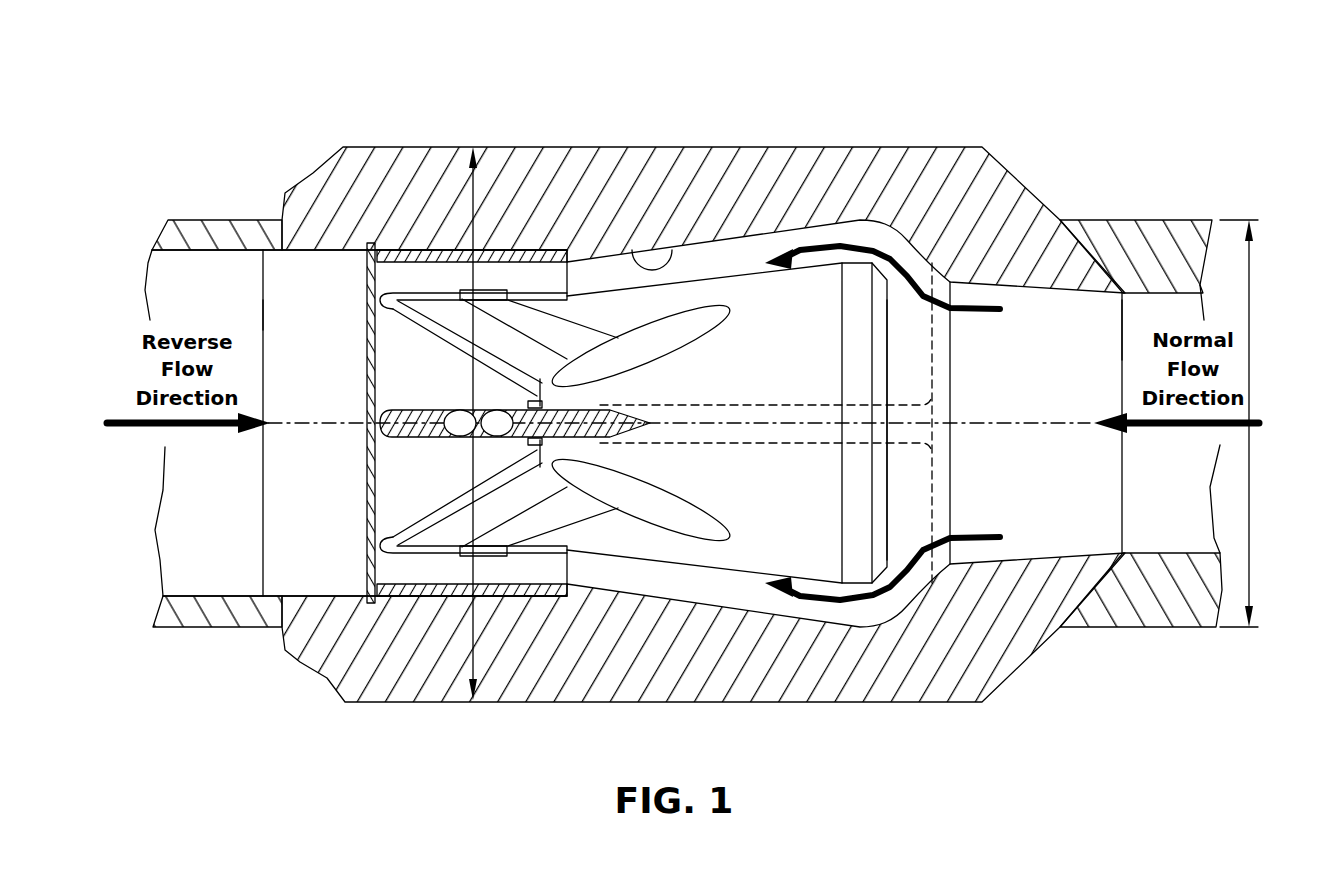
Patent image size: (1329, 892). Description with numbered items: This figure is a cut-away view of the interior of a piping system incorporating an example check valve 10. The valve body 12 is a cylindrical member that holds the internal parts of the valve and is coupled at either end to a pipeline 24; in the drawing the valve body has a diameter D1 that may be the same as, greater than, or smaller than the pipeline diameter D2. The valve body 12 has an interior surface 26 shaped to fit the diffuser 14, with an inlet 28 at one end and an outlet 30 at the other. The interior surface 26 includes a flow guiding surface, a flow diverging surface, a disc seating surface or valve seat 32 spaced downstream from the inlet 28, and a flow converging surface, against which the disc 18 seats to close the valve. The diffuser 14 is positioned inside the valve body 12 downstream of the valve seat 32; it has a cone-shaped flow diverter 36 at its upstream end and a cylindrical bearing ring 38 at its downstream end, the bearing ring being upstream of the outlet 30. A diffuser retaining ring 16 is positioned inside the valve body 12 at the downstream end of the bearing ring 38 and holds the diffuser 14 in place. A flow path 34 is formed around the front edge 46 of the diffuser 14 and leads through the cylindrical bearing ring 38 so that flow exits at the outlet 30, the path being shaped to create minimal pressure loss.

The valve 10 is at (822, 58).
The valve body 12 is at (855, 172).
The diffuser 14 is at (757, 333).
The diffuser retaining ring 16 is at (370, 527).
The disc 18 is at (905, 230).
The pipeline 24 is at (203, 240).
The interior surface 26 is at (670, 248).
The inlet 28 is at (1121, 359).
The outlet 30 is at (263, 320).
The valve seat 32 is at (963, 242).
The flow path 34 is at (822, 252).
The cone-shaped flow diverter 36 is at (817, 548).
The cylindrical bearing ring 38 is at (527, 283).
The front edge 46 is at (867, 548).
The valve body diameter D1 is at (478, 195).
The pipeline diameter D2 is at (1249, 276).